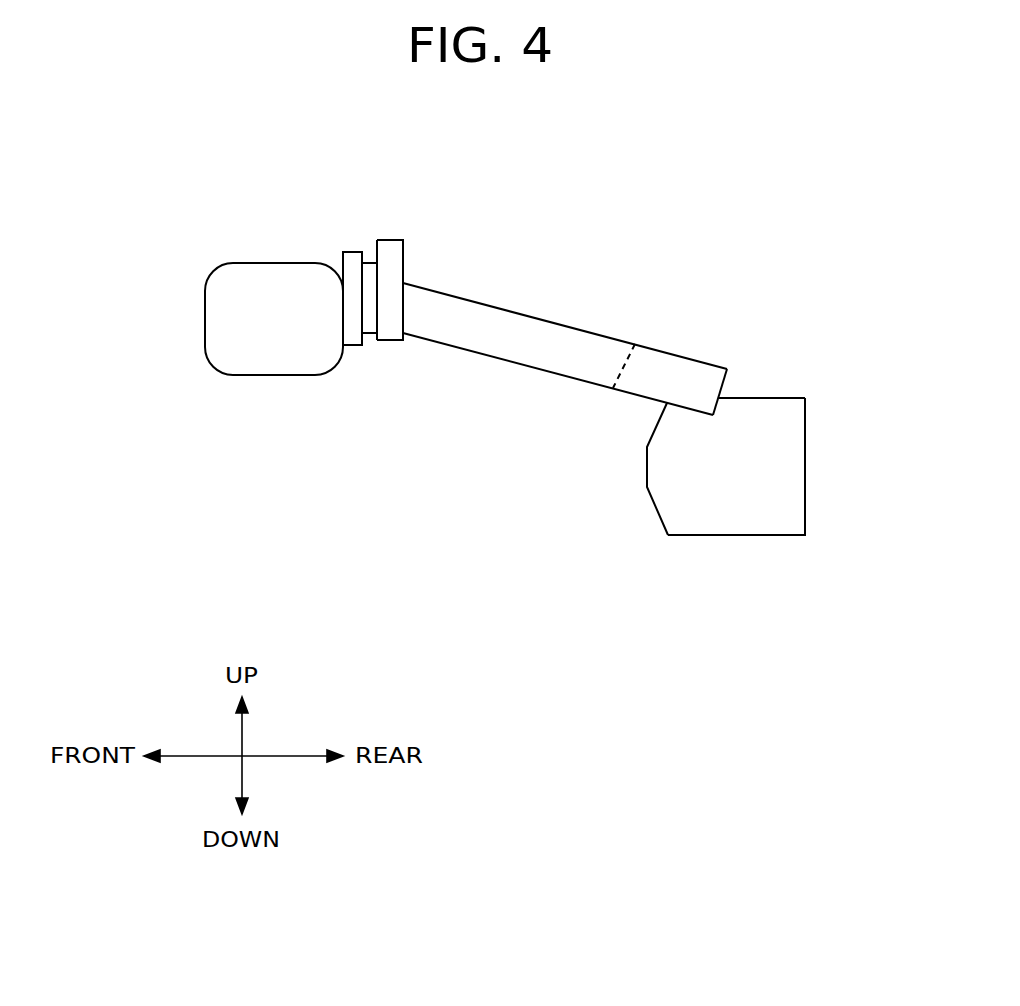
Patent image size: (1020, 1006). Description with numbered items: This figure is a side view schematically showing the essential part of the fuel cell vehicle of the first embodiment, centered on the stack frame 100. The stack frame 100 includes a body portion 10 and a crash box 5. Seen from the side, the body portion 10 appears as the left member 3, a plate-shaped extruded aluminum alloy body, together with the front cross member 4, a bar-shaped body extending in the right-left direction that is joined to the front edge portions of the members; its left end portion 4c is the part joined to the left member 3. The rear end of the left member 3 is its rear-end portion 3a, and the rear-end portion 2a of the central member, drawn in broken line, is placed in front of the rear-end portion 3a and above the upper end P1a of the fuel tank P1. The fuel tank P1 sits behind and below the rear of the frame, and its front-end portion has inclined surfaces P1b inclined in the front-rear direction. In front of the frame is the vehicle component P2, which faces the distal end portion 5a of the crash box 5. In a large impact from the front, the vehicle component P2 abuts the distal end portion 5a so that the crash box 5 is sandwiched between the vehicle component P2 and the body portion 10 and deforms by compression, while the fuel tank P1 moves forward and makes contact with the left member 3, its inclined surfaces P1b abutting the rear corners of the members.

The stack frame 100 is at (758, 246).
The body portion 10 is at (461, 298).
The left member 3 is at (537, 318).
The rear-end portion of the left member 3a is at (729, 371).
The rear-end portion of the central member 2a is at (635, 344).
The front cross member 4 is at (398, 240).
The left end portion of the front cross member 4c is at (392, 305).
The crash box 5 is at (368, 262).
The distal end portion of the crash box 5a is at (348, 250).
The vehicle component P2 is at (262, 262).
The fuel tank P1 is at (737, 537).
The upper end of the fuel tank P1a is at (797, 397).
The inclined surfaces of the fuel tank P1b is at (668, 464).